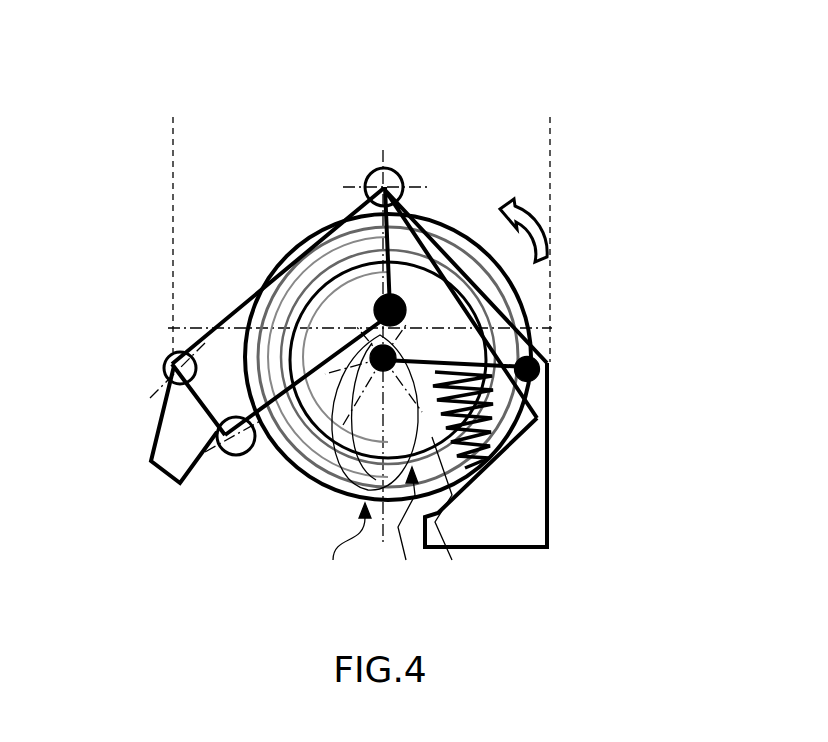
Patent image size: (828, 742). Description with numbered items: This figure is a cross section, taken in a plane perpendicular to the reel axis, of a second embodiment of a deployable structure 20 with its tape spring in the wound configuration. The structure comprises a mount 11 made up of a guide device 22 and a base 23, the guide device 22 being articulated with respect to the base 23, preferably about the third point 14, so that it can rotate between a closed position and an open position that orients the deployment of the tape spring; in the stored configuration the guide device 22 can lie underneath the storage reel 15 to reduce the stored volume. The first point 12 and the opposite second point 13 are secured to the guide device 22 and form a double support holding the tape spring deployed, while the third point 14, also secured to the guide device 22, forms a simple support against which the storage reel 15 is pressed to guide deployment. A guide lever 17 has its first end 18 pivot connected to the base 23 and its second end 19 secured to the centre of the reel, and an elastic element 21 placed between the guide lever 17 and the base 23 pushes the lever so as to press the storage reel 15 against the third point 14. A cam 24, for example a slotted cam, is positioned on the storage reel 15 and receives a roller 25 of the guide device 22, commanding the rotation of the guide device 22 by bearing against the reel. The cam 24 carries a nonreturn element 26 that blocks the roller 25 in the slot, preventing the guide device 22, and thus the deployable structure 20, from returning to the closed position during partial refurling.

The mount 11 is at (173, 117).
The first point 12 is at (168, 362).
The second point 13 is at (226, 453).
The third point 14 is at (400, 178).
The storage reel 15 is at (338, 548).
The guide lever 17 is at (478, 386).
The first end 18 is at (540, 377).
The second end 19 is at (342, 483).
The deployable structure 20 is at (122, 122).
The elastic element 21 is at (498, 400).
The guide device 22 is at (247, 300).
The base 23 is at (528, 342).
The cam 24 is at (404, 530).
The roller 25 is at (336, 467).
The nonreturn element 26 is at (454, 521).